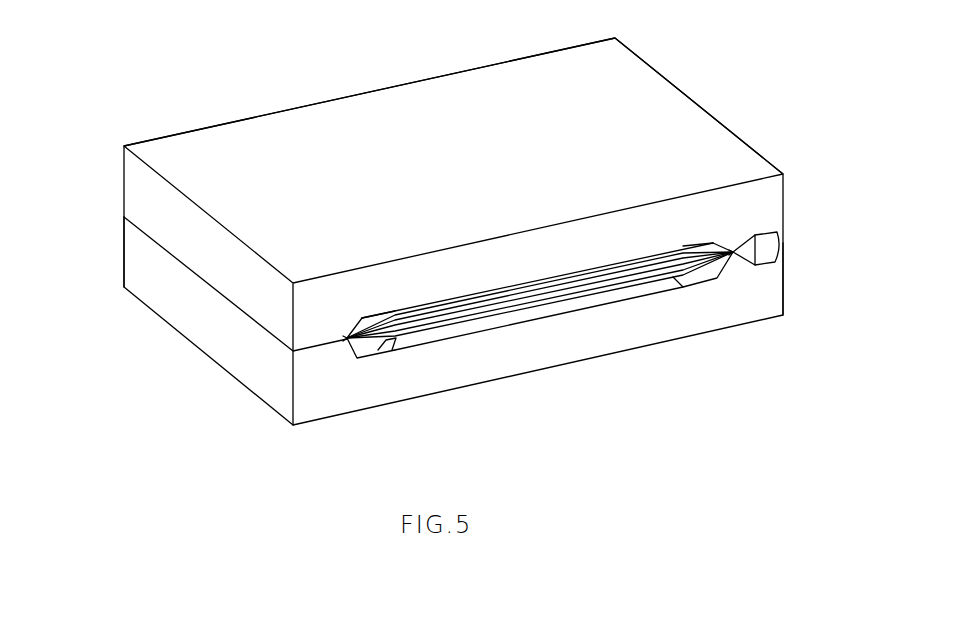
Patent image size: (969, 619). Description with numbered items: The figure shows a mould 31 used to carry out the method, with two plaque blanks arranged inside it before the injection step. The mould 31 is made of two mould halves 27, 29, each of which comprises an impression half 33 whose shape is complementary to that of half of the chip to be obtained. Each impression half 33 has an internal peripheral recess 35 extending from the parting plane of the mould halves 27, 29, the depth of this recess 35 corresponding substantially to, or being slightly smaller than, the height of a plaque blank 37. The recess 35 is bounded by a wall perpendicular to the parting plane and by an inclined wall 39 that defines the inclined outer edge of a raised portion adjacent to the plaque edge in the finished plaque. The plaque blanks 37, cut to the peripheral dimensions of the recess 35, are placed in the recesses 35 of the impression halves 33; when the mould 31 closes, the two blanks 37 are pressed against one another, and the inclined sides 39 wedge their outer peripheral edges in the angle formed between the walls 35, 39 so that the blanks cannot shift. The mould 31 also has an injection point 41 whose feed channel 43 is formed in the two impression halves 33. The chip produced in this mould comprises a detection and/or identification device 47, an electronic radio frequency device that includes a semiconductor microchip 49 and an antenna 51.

The mould half 27 is at (655, 107).
The mould half 29 is at (615, 325).
The mould 31 is at (165, 350).
The impression half 33 is at (387, 307).
The internal peripheral recess 35 is at (340, 335).
The plaque blank 37 is at (445, 310).
The inclined wall 39 is at (347, 334).
The injection point 41 is at (753, 237).
The feed channel 43 is at (770, 254).
The detection and/or identification device 47 is at (562, 320).
The semiconductor microchip 49 is at (533, 305).
The antenna 51 is at (487, 306).